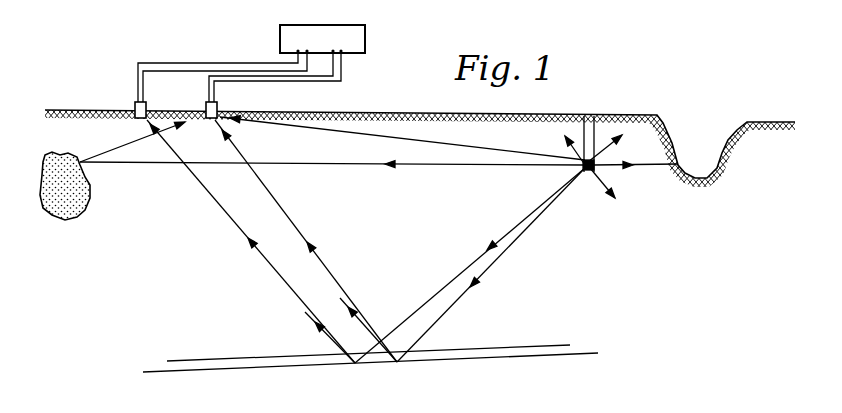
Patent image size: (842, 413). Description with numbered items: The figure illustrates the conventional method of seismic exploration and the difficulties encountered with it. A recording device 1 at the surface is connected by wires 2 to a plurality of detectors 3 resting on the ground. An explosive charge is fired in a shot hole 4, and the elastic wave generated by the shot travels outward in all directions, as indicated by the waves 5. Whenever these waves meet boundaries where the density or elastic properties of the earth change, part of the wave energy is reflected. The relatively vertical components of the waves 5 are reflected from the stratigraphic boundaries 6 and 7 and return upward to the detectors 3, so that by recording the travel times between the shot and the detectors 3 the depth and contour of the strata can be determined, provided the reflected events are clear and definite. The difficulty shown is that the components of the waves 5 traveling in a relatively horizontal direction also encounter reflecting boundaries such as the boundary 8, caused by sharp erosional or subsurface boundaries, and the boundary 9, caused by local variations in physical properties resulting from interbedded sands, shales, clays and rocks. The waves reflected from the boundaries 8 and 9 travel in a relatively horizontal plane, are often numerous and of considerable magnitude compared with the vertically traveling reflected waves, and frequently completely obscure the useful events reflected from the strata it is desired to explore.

The recording device 1 is at (365, 40).
The wires 2 is at (207, 88).
The detectors 3 is at (135, 106).
The shot hole 4 is at (593, 112).
The waves 5 is at (607, 188).
The stratigraphic boundary 6 is at (488, 349).
The stratigraphic boundary 7 is at (462, 360).
The reflecting boundary 8 is at (673, 143).
The reflecting boundary 9 is at (85, 185).